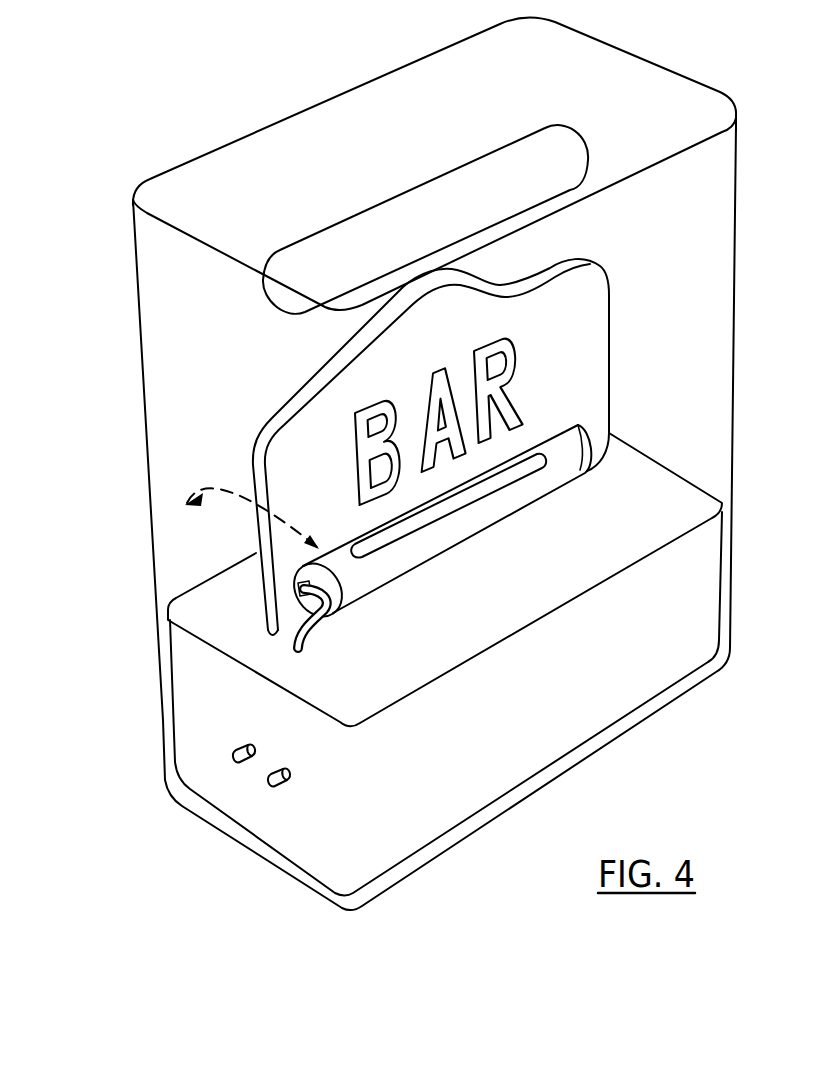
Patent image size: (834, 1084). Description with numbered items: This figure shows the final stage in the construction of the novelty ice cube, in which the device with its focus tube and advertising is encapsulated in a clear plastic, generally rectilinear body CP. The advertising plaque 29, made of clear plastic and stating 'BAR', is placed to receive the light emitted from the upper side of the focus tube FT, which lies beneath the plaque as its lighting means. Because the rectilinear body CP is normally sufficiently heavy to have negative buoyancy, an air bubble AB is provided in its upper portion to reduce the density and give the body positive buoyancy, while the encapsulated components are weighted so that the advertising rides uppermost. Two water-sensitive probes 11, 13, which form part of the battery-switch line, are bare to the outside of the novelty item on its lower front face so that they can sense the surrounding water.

The clear plastic rectilinear body CP is at (713, 271).
The air bubble AB is at (453, 190).
The advertising plaque 29 is at (598, 394).
The focus tube FT is at (533, 487).
The probe 11 is at (243, 751).
The probe 13 is at (288, 777).